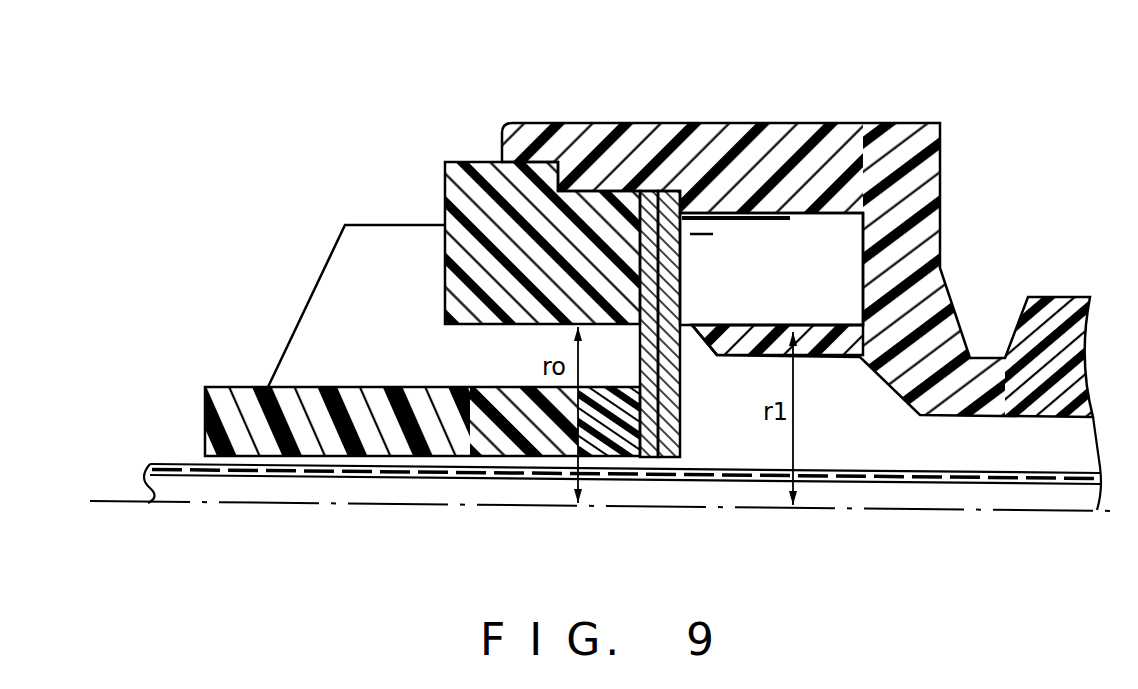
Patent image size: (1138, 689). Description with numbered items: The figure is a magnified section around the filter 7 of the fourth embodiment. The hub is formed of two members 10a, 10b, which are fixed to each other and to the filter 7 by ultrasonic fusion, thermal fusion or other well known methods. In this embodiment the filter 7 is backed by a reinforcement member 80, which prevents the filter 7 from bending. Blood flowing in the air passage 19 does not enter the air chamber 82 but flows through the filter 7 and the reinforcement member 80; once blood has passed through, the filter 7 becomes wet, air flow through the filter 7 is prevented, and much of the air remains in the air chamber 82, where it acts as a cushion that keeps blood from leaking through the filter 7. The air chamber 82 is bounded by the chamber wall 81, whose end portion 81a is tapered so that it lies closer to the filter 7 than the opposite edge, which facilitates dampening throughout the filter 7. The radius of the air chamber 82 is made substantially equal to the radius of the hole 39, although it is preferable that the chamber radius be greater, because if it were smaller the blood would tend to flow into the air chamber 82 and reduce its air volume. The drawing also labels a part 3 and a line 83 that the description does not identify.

The inner ring / hub member 3 is at (290, 397).
The filter 7 is at (650, 217).
The air passage 19 is at (907, 448).
The hole 39 is at (460, 363).
The reinforcement member 80 is at (677, 127).
The chamber wall 81 is at (803, 330).
The end portion of the chamber wall 81a is at (692, 323).
The air chamber 82 is at (787, 243).
The rotation axis 83 is at (120, 500).
The member 10a is at (798, 249).
The member 10b is at (419, 279).